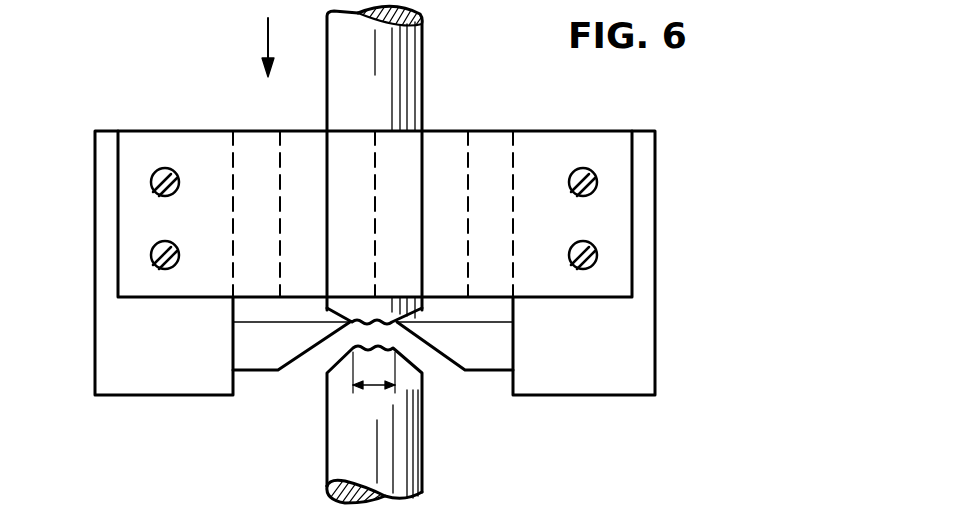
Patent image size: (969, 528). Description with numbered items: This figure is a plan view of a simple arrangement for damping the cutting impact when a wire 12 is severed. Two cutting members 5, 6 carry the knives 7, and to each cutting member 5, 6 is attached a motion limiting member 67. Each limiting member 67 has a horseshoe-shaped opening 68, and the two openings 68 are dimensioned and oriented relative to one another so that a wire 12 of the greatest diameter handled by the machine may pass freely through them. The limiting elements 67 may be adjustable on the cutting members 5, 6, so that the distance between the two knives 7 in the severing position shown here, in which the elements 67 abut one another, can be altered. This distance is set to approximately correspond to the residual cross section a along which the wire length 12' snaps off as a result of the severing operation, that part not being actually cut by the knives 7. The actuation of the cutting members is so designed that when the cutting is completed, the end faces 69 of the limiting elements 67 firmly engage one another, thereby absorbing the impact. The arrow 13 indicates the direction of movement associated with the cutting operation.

The cutting member 5 is at (107, 350).
The cutting member 6 is at (655, 345).
The knives 7 is at (262, 360).
The wire 12 is at (407, 162).
The wire length 12' is at (413, 426).
The feed direction arrow 13 is at (258, 36).
The motion limiting member 67 is at (162, 147).
The horseshoe-shaped opening 68 is at (450, 152).
The end faces 69 is at (377, 172).
The residual cross section a is at (374, 372).